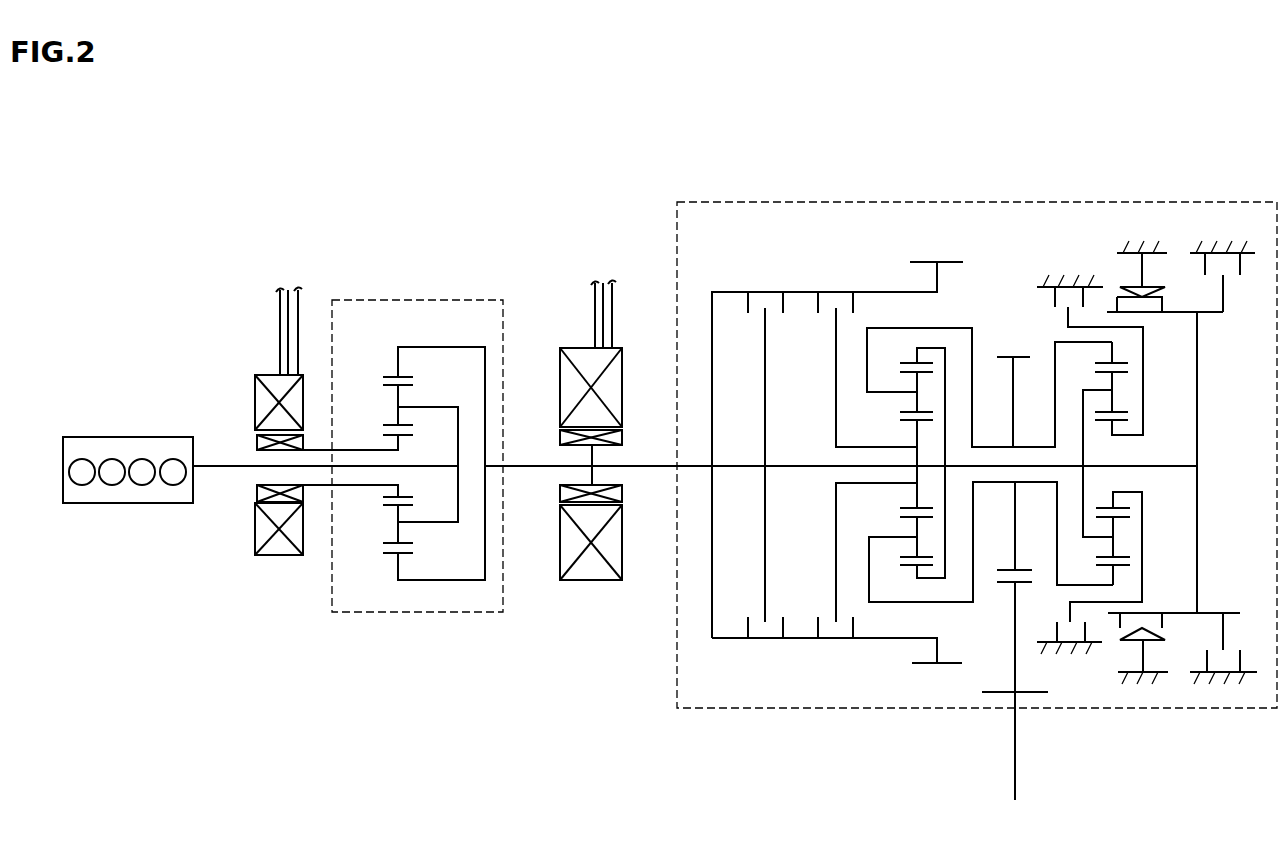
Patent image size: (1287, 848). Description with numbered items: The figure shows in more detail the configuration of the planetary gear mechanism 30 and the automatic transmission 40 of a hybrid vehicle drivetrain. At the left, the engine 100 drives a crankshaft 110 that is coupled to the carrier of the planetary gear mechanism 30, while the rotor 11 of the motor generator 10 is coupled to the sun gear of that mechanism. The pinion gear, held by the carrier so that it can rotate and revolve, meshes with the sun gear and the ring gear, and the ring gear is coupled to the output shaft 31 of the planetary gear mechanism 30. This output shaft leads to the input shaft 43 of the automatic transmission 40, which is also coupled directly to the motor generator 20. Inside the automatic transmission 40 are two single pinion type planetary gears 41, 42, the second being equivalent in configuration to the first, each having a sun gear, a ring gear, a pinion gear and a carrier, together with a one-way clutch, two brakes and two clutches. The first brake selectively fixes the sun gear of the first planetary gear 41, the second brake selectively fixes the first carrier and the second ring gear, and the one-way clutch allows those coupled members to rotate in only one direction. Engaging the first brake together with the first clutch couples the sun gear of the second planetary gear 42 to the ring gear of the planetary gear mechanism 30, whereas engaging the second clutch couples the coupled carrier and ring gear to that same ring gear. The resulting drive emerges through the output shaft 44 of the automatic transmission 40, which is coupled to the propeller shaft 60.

The motor generator 10 is at (263, 375).
The rotor 11 is at (255, 489).
The motor generator 20 is at (573, 347).
The planetary gear mechanism 30 is at (407, 440).
The output shaft 31 is at (527, 463).
The automatic transmission 40 is at (1216, 200).
The planetary gear 41 is at (1157, 464).
The planetary gear 42 is at (977, 415).
The input shaft 43 is at (729, 292).
The output shaft 44 is at (1013, 522).
The propeller shaft 60 is at (1018, 752).
The engine 100 is at (170, 437).
The crankshaft 110 is at (212, 468).